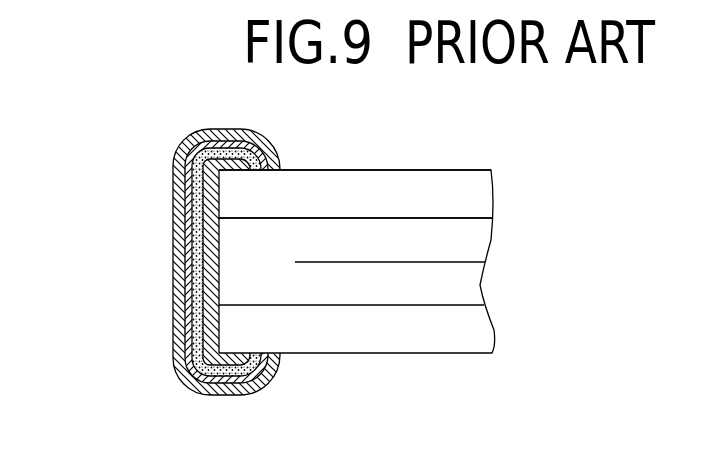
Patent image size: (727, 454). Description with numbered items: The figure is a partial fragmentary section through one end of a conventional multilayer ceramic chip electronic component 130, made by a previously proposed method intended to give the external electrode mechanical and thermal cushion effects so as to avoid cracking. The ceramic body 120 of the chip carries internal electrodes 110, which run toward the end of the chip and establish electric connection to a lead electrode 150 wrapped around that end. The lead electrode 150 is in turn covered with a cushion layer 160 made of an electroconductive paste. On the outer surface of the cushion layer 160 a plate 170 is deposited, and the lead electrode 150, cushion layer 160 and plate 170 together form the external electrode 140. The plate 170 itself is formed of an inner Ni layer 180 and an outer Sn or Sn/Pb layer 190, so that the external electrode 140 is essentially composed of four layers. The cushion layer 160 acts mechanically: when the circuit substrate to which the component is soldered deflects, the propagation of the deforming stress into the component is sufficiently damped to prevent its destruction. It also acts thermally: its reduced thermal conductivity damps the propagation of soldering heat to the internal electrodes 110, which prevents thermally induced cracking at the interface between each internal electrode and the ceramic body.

The internal electrodes 110 is at (460, 219).
The electrode layer 120 is at (482, 190).
The laminate body 130 is at (372, 169).
The external electrode 140 is at (209, 129).
The lead electrode 150 is at (185, 222).
The cushion layer 160 is at (178, 258).
The plate 170 is at (173, 183).
The inner Ni layer 180 is at (180, 291).
The outer Sn or Sn/Pb layer 190 is at (175, 338).